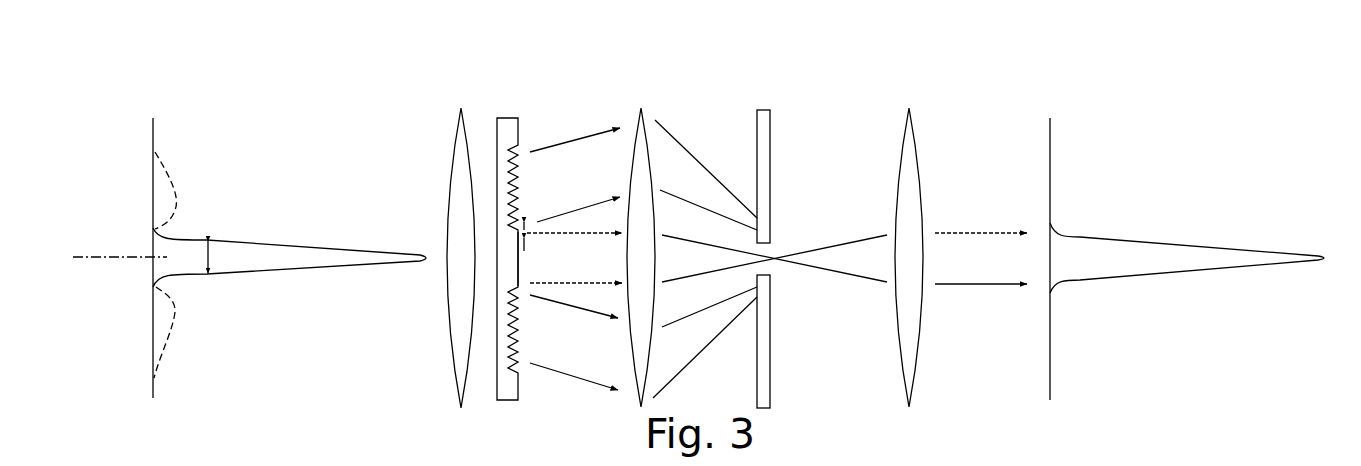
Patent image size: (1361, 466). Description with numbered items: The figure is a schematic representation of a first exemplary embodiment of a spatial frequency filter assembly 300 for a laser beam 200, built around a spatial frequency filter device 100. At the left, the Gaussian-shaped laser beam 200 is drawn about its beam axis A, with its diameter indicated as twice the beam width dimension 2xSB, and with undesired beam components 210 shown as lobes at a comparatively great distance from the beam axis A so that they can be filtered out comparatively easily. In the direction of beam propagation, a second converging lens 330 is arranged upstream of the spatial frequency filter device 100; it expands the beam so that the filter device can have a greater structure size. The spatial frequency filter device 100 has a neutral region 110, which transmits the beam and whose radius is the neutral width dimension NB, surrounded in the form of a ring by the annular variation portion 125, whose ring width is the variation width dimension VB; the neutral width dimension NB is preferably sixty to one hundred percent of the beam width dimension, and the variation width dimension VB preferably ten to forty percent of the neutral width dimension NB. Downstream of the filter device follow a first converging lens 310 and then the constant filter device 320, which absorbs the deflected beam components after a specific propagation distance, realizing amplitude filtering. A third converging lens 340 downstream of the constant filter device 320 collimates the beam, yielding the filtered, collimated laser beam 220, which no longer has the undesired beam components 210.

The spatial frequency filter device 100 is at (516, 108).
The neutral region 110 is at (531, 270).
The variation portion 125 is at (550, 226).
The laser beam 200 is at (296, 214).
The beam components 210 is at (162, 172).
The filtered, collimated laser beam 220 is at (1130, 232).
The spatial frequency filter assembly 300 is at (832, 86).
The first converging lens 310 is at (642, 108).
The constant filter device 320 is at (763, 110).
The second converging lens 330 is at (462, 108).
The third converging lens 340 is at (909, 108).
The beam axis A is at (118, 257).
The twice the beam width dimension 2xSB is at (202, 257).
The variation width dimension VB is at (526, 222).
The neutral width dimension NB is at (525, 250).